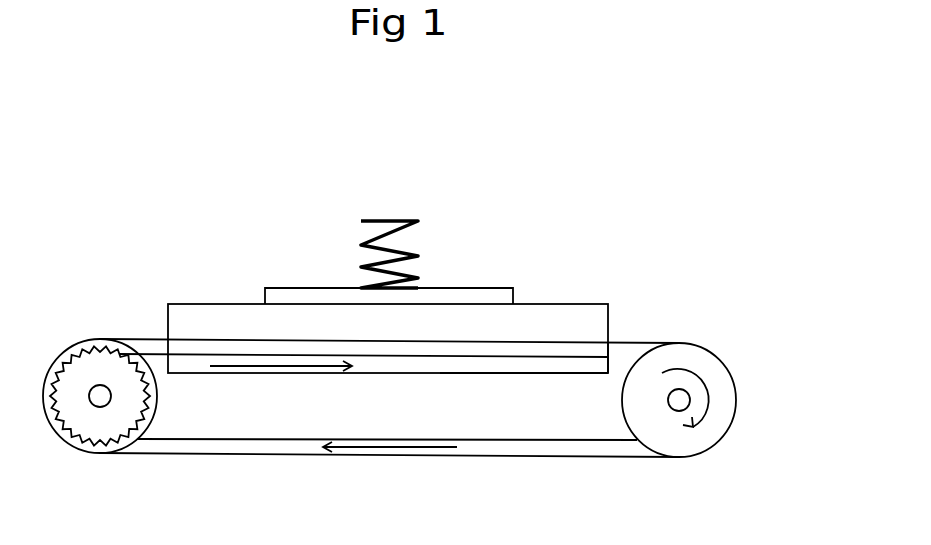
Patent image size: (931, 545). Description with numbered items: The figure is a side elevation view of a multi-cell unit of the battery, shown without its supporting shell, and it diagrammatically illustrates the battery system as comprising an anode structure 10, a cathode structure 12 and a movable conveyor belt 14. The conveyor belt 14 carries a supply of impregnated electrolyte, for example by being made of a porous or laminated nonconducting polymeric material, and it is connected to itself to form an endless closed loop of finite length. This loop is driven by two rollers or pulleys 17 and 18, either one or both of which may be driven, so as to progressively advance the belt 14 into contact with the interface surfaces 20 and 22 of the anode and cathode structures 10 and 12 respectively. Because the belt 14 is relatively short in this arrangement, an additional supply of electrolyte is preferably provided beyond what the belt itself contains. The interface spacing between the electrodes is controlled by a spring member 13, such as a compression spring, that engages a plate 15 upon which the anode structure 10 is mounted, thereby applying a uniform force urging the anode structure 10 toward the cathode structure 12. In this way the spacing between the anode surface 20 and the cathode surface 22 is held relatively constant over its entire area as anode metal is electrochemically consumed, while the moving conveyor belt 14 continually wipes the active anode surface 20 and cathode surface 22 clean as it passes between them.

The anode structure 10 is at (537, 320).
The cathode structure 12 is at (372, 365).
The spring member 13 is at (389, 220).
The movable conveyor belt 14 is at (145, 350).
The plate 15 is at (458, 298).
The roller or pulley 17 is at (72, 355).
The roller or pulley 18 is at (693, 343).
The anode interface surface 20 is at (581, 342).
The cathode interface surface 22 is at (493, 358).